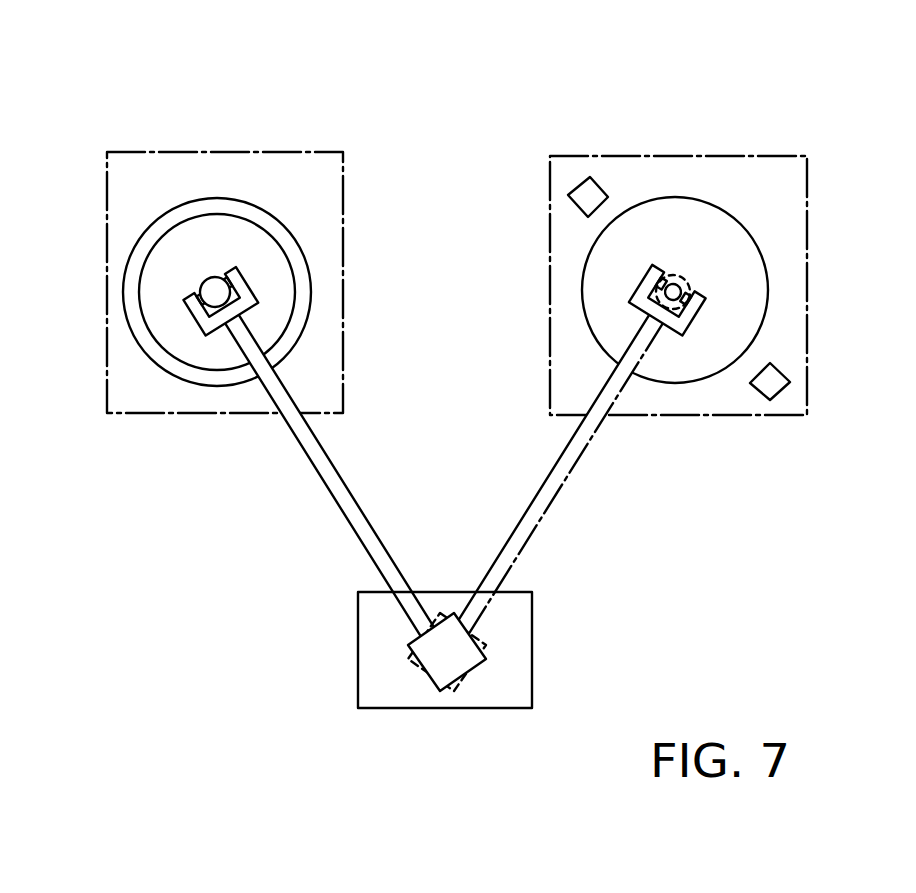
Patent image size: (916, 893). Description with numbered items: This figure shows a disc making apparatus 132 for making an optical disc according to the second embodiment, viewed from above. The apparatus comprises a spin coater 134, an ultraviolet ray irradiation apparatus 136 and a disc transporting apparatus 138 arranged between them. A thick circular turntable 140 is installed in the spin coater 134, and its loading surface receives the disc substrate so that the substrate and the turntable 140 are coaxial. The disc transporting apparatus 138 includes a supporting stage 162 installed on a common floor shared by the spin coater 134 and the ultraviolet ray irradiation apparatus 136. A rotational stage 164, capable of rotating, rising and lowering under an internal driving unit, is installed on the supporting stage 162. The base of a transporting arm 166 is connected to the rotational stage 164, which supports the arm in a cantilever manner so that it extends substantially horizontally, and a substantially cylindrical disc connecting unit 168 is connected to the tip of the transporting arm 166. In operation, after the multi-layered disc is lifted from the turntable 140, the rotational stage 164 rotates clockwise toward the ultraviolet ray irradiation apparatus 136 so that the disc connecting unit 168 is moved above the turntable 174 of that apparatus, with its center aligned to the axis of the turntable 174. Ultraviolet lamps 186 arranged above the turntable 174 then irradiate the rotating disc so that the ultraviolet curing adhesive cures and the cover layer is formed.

The tool transfer system 132 is at (812, 106).
The spin coater 134 is at (107, 152).
The ultraviolet ray irradiation apparatus 136 is at (807, 156).
The disc transporting apparatus 138 is at (362, 720).
The turntable 140 is at (250, 199).
The supporting stage 162 is at (533, 655).
The rotational stage 164 is at (443, 690).
The transporting arm 166 is at (313, 462).
The disc connecting unit 168 is at (206, 278).
The turntable 174 is at (768, 280).
The ultraviolet lamps 186 is at (598, 181).